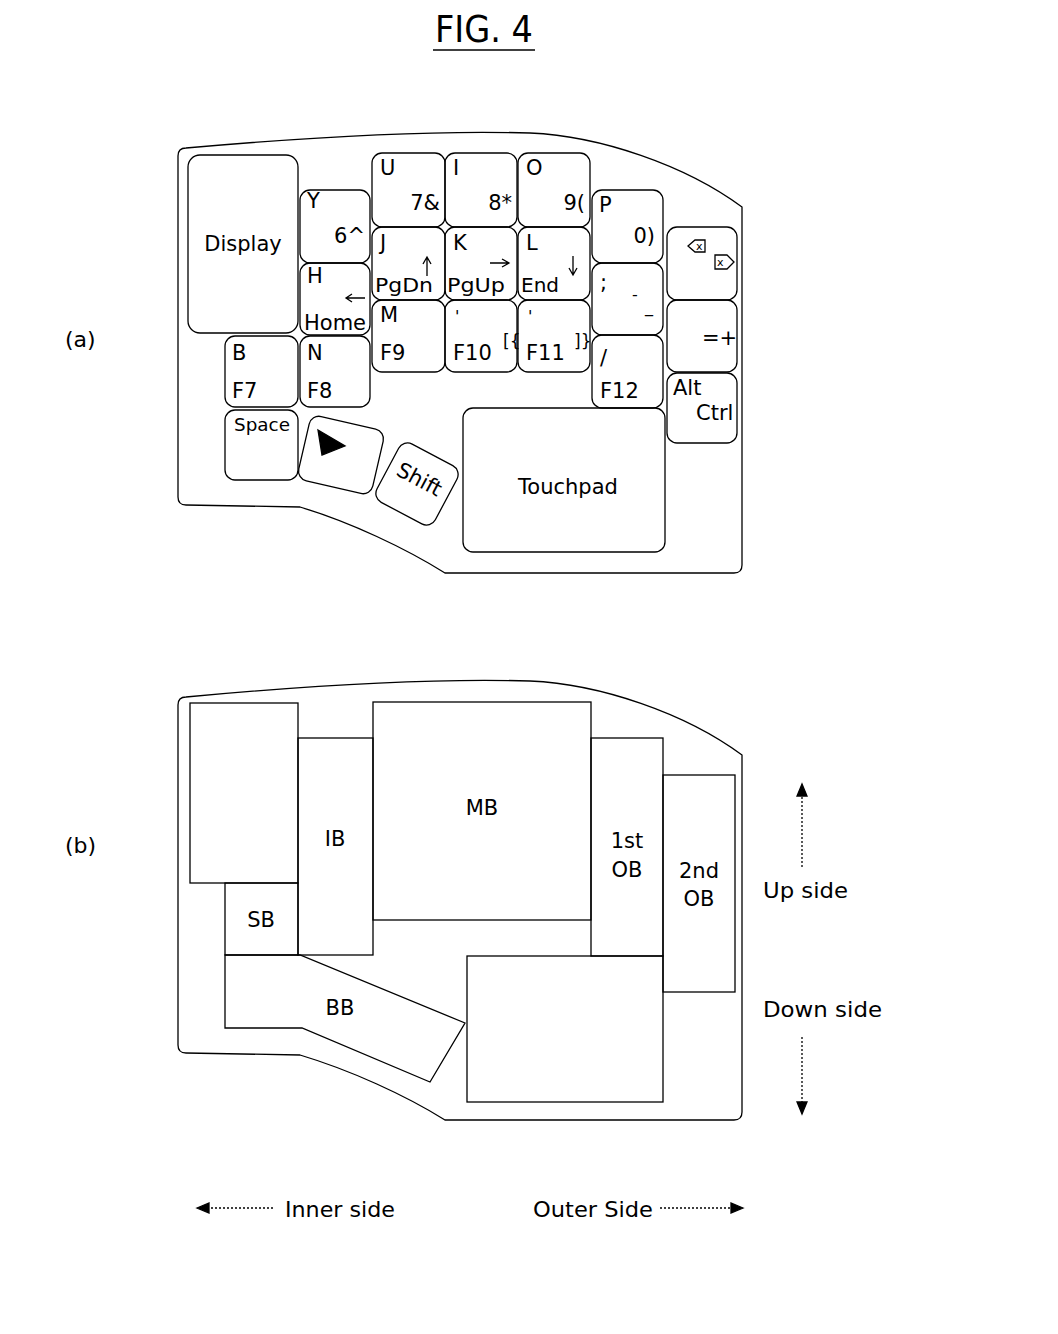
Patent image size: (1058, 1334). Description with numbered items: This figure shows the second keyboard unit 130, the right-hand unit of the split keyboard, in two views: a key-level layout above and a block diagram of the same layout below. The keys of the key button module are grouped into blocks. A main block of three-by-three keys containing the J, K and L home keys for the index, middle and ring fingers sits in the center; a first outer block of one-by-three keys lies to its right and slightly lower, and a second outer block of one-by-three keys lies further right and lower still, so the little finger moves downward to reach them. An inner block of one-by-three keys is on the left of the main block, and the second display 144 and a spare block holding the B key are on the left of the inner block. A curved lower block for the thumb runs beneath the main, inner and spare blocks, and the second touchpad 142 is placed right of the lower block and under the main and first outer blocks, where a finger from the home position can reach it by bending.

The second keyboard unit 130 is at (745, 278).
The second display 144 is at (182, 745).
The second touchpad 142 is at (533, 1105).